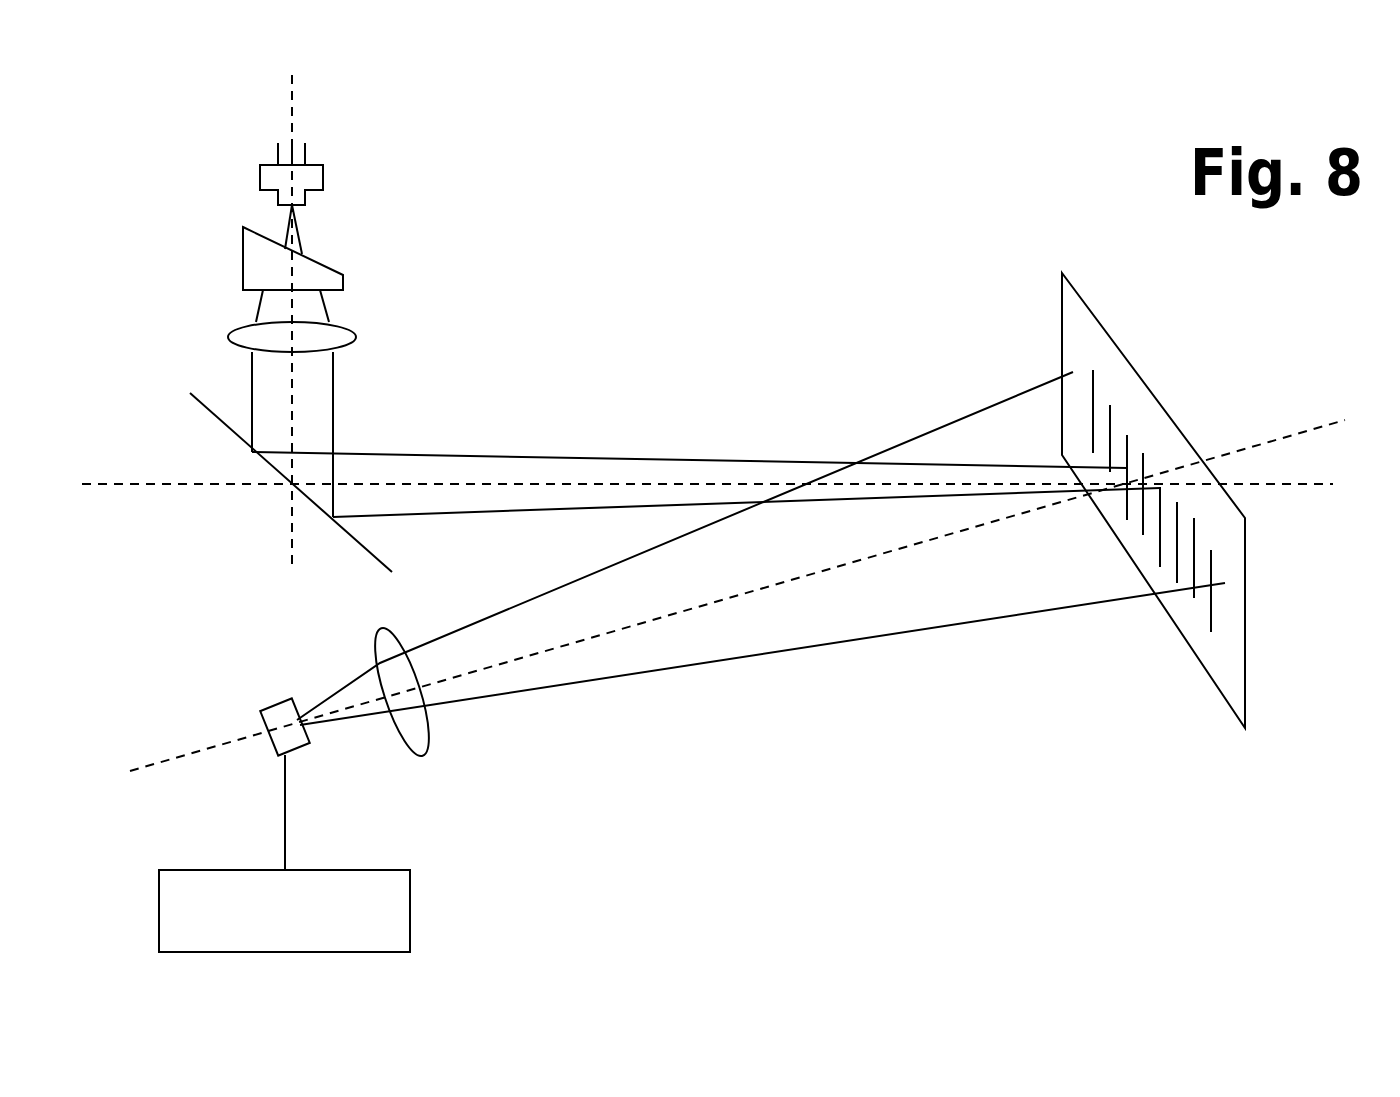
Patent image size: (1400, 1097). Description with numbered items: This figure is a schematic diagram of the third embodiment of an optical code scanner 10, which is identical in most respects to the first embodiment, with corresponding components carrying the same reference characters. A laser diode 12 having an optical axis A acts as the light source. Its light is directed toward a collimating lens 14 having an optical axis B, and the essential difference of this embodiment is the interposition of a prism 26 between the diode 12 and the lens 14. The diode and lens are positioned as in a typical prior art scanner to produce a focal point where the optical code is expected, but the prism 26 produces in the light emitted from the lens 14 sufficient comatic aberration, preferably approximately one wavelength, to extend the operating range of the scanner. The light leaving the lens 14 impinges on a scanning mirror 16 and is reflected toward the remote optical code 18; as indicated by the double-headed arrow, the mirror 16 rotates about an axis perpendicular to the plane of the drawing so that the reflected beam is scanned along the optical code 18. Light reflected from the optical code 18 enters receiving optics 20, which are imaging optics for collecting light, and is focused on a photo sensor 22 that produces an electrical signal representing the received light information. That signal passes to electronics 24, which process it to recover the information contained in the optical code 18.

The optical code scanner 10 is at (809, 114).
The laser diode 12 is at (380, 198).
The collimating lens 14 is at (377, 323).
The scanning mirror 16 is at (198, 372).
The optical code 18 is at (1062, 273).
The receiving optics 20 is at (458, 725).
The photo sensor 22 is at (295, 694).
The electronics 24 is at (284, 853).
The prism 26 is at (193, 258).